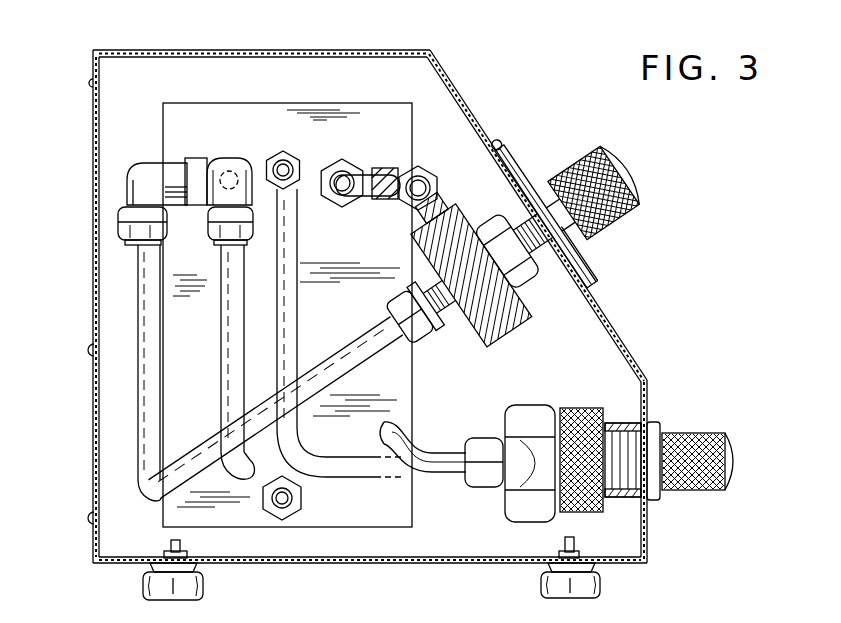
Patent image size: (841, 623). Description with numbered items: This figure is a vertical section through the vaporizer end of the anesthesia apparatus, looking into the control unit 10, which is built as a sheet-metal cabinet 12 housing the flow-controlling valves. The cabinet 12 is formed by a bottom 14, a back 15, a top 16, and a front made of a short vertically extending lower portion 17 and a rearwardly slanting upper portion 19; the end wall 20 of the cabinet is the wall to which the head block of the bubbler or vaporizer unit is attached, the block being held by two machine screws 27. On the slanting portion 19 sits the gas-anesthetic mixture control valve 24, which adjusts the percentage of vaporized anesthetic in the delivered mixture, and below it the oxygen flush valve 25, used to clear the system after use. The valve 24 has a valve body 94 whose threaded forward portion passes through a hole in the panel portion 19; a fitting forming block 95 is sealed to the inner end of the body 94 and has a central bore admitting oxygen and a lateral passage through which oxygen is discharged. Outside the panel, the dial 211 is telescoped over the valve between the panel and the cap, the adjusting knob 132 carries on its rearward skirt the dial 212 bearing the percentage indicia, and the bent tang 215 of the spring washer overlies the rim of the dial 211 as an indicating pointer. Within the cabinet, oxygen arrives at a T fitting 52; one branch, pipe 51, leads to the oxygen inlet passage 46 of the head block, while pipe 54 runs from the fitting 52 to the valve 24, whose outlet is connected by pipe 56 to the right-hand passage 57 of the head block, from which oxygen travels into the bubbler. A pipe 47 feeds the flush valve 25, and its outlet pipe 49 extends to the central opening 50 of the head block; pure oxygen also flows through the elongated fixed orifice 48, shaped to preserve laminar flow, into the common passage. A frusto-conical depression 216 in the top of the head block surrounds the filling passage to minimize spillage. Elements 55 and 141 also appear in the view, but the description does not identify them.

The control unit 10 is at (364, 307).
The cabinet 12 is at (86, 553).
The bottom 14 is at (430, 562).
The back 15 is at (93, 212).
The top 16 is at (311, 33).
The lower portion of front 17 is at (647, 403).
The upper portion of front 19 is at (607, 327).
The end wall 20 is at (183, 113).
The gas-anesthetic mixture control valve 24 is at (553, 178).
The oxygen flush valve 25 is at (610, 506).
The machine screws 27 is at (380, 182).
The oxygen inlet passage 46 is at (245, 160).
The pipe 47 is at (417, 462).
The fixed orifice 48 is at (173, 581).
The outlet pipe 49 is at (283, 327).
The central opening 50 is at (287, 152).
The pipe 51 is at (222, 352).
The T fitting 52 is at (222, 143).
The pipe 54 is at (137, 392).
The nut 55 is at (423, 172).
The pipe 56 is at (378, 198).
The right-hand passage 57 is at (337, 203).
The valve body 94 is at (515, 212).
The fitting forming block 95 is at (480, 348).
The adjusting knob 132 is at (620, 208).
The mounting bolt 141 is at (589, 580).
The dial 211 is at (590, 283).
The dial 212 is at (532, 173).
The tang 215 is at (510, 150).
The frusto-conical depression 216 is at (624, 599).